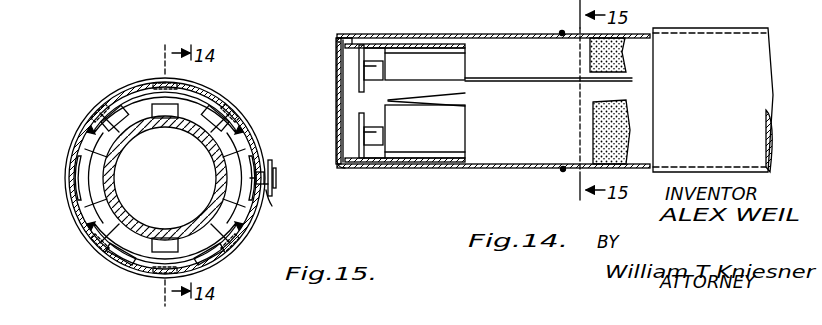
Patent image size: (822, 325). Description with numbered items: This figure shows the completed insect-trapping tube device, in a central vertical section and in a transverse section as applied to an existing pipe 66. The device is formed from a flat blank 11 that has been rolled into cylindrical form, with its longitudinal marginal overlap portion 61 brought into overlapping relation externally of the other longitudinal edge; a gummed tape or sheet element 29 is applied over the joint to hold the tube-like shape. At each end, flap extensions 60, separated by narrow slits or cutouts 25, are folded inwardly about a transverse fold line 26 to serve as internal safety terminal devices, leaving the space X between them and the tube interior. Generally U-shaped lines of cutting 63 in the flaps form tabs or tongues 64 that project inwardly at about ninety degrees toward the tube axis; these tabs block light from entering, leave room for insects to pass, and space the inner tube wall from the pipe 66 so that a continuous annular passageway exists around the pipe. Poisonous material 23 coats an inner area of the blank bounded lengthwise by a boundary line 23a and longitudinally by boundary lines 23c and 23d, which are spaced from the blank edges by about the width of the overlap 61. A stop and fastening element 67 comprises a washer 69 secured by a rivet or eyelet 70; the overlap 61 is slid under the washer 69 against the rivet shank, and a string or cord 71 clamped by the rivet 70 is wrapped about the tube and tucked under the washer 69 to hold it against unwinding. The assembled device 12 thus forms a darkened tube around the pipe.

In FIG. 14, the blank 11 is at (424, 170).
In FIG. 15, the assembly 12 is at (252, 96).
In FIG. 14, the poisonous material 23 is at (592, 50).
In FIG. 14, the boundary line 23a is at (594, 150).
In FIG. 14, the longitudinally extending boundary line 23c is at (630, 64).
In FIG. 14, the longitudinally extending boundary line 23d is at (626, 104).
In FIG. 15, the slits or cutouts 25 is at (80, 180).
In FIG. 14, the slits or cutouts 25 is at (468, 50).
In FIG. 14, the transverse fold line 26 is at (338, 44).
In FIG. 14, the gummed tape or sheet element 29 is at (712, 30).
In FIG. 15, the flap extensions 60 is at (86, 202).
In FIG. 14, the flap extensions 60 is at (468, 47).
In FIG. 15, the overlap portion 61 is at (264, 156).
In FIG. 15, the lines of cutting 63 is at (186, 92).
In FIG. 14, the lines of cutting 63 is at (404, 48).
In FIG. 15, the tabs or tongues 64 is at (96, 146).
In FIG. 14, the tabs or tongues 64 is at (359, 58).
In FIG. 15, the pipe 66 is at (108, 172).
In FIG. 15, the stop and fastening element 67 is at (276, 165).
In FIG. 15, the washer 69 is at (272, 182).
In FIG. 15, the rivet or eyelet 70 is at (277, 172).
In FIG. 15, the string or cord 71 is at (112, 98).
In FIG. 14, the string or cord 71 is at (561, 31).
In FIG. 15, the space X is at (100, 115).
In FIG. 14, the space X is at (496, 40).